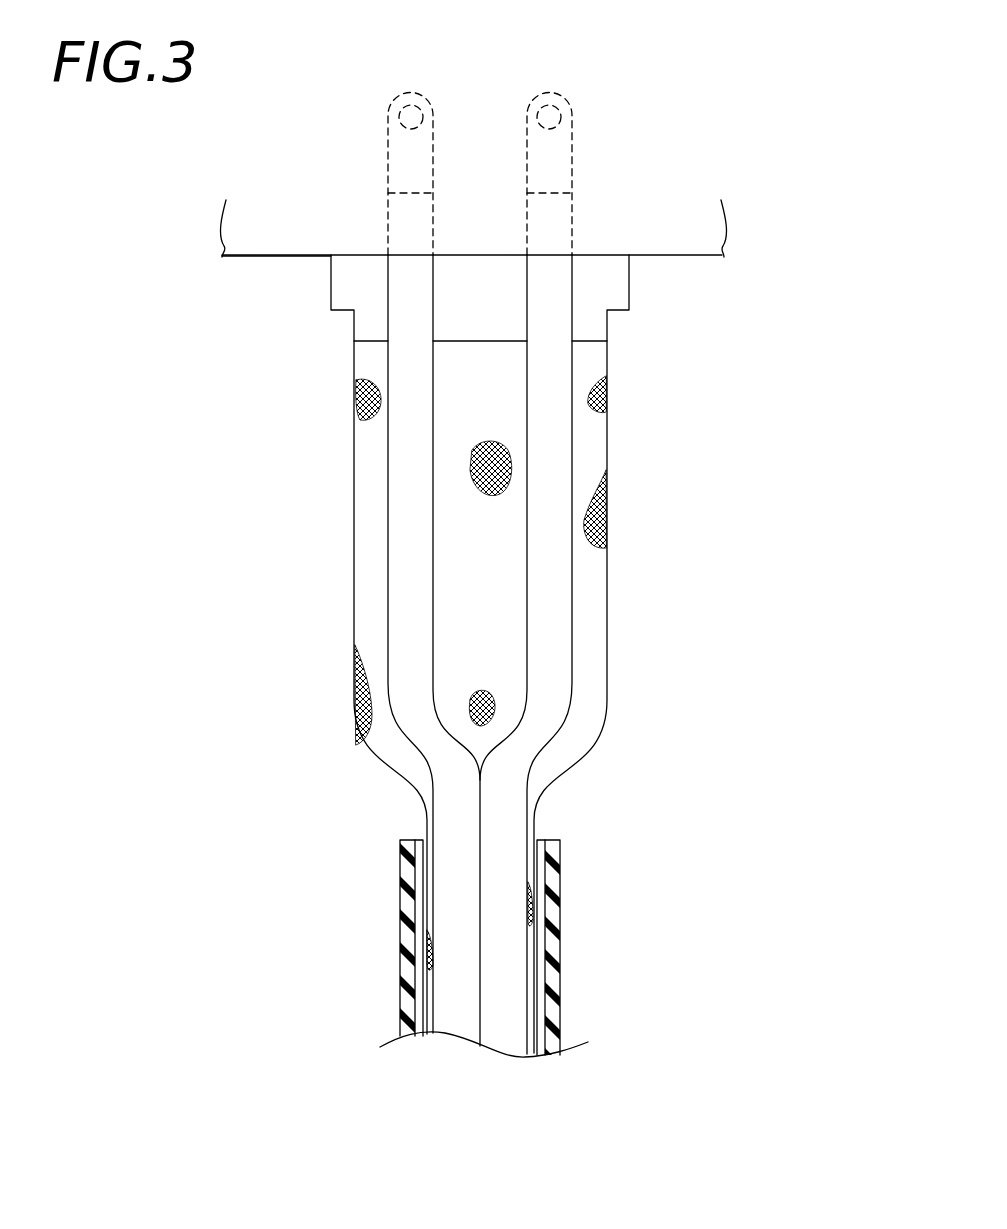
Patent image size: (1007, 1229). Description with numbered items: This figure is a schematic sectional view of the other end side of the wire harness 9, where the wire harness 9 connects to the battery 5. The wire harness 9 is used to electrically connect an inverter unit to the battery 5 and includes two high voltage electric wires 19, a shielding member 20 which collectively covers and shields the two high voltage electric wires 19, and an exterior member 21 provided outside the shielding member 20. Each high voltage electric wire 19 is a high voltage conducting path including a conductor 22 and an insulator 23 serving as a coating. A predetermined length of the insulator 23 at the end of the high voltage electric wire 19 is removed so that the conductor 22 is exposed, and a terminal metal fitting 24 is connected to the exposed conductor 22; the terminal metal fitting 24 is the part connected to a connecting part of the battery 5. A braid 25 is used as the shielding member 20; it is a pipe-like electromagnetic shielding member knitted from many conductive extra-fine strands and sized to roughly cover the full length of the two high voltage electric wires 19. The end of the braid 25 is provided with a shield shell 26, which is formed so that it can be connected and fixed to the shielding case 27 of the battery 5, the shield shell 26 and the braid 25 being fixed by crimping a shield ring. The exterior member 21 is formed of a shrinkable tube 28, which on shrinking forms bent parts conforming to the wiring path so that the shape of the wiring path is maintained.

The wire harness 9 is at (212, 751).
The battery 5 is at (222, 230).
The shielding case 27 is at (233, 260).
The shield shell 26 is at (333, 286).
The terminal metal fitting 24 is at (386, 133).
The shielding member 20 is at (348, 501).
The high voltage electric wire 19 is at (400, 558).
The insulator 23 is at (400, 617).
The conductor 22 is at (400, 667).
The braid 25 is at (607, 513).
The exterior member 21 is at (393, 978).
The shrinkable tube 28 is at (555, 1003).